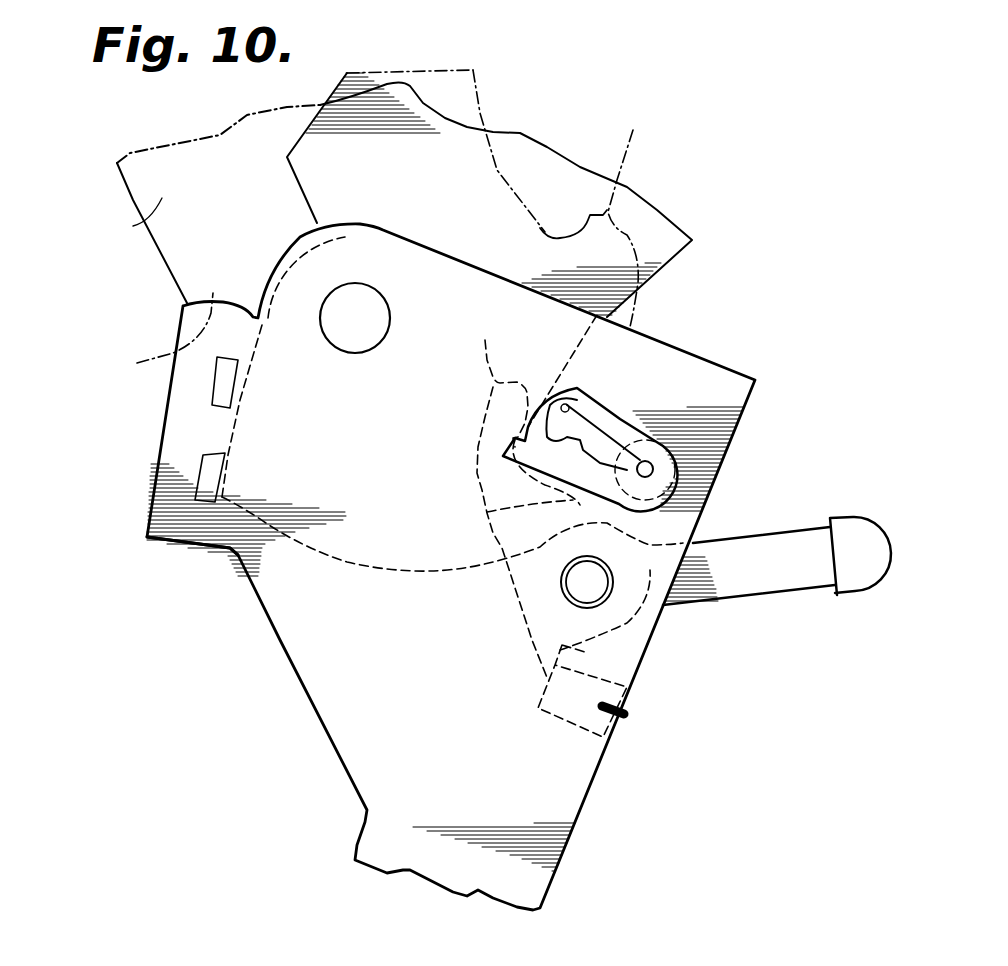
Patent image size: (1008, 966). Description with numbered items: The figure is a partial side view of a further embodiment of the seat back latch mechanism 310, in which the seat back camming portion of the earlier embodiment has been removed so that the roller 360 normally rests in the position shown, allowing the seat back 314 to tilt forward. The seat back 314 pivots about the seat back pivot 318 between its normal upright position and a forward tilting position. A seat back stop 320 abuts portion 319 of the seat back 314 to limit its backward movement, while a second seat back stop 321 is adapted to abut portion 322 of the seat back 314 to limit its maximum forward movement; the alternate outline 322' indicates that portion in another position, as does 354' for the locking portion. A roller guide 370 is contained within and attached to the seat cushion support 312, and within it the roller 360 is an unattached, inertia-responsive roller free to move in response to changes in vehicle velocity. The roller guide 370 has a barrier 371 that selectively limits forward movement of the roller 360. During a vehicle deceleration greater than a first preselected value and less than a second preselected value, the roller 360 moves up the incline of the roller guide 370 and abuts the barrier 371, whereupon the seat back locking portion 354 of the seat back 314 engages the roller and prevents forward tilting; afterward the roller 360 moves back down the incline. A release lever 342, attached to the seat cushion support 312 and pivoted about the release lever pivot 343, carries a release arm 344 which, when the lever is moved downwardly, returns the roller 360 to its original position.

The seat back latch mechanism 310 is at (707, 342).
The seat cushion support 312 is at (368, 738).
The seat back 314 is at (353, 90).
The seat back pivot 318 is at (358, 327).
The portion of seat back 319 is at (260, 505).
The seat back stop 320 is at (205, 481).
The seat back stop 321 is at (232, 399).
The portion of seat back 322 is at (370, 151).
The bracket portion alternate position 322' is at (145, 336).
The release lever 342 is at (812, 567).
The release lever pivot 343 is at (587, 592).
The release arm 344 is at (484, 335).
The seat back locking portion 354 is at (452, 482).
The follower member alternate position 354' is at (602, 216).
The roller 360 is at (650, 468).
The roller guide 370 is at (565, 404).
The barrier 371 is at (640, 467).